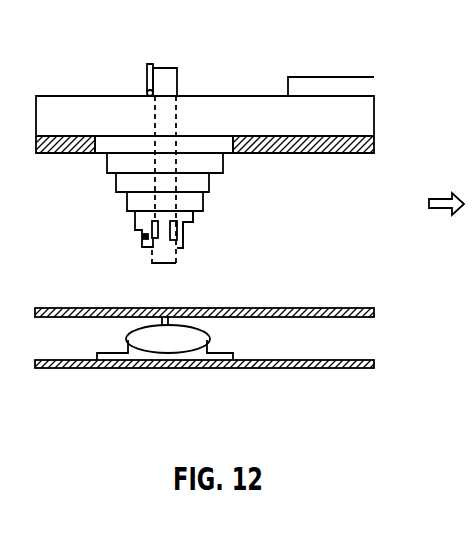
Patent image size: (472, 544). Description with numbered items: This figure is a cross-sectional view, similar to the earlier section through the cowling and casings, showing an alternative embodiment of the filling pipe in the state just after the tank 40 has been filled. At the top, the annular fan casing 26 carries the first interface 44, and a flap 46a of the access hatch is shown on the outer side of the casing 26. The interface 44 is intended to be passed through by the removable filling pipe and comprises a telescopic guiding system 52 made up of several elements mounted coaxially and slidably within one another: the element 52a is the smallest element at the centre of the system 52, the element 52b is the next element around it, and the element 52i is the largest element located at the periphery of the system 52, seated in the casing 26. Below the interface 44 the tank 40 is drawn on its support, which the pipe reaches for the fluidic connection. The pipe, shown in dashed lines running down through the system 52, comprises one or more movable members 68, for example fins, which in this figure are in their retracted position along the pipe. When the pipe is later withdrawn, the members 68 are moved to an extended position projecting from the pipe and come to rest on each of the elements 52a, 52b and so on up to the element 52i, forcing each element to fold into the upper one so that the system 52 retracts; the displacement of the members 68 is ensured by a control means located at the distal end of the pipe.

The annular fan casing 26 is at (374, 143).
The largest element of the telescopic guiding system 52i is at (205, 143).
The flap 46a is at (150, 66).
The telescopic guiding system 52 is at (118, 201).
The element of the telescopic guiding system 52b is at (195, 222).
The smallest element of the telescopic guiding system 52a is at (190, 245).
The movable members 68 is at (176, 242).
The first interface 44 is at (138, 272).
The tank 40 is at (182, 343).